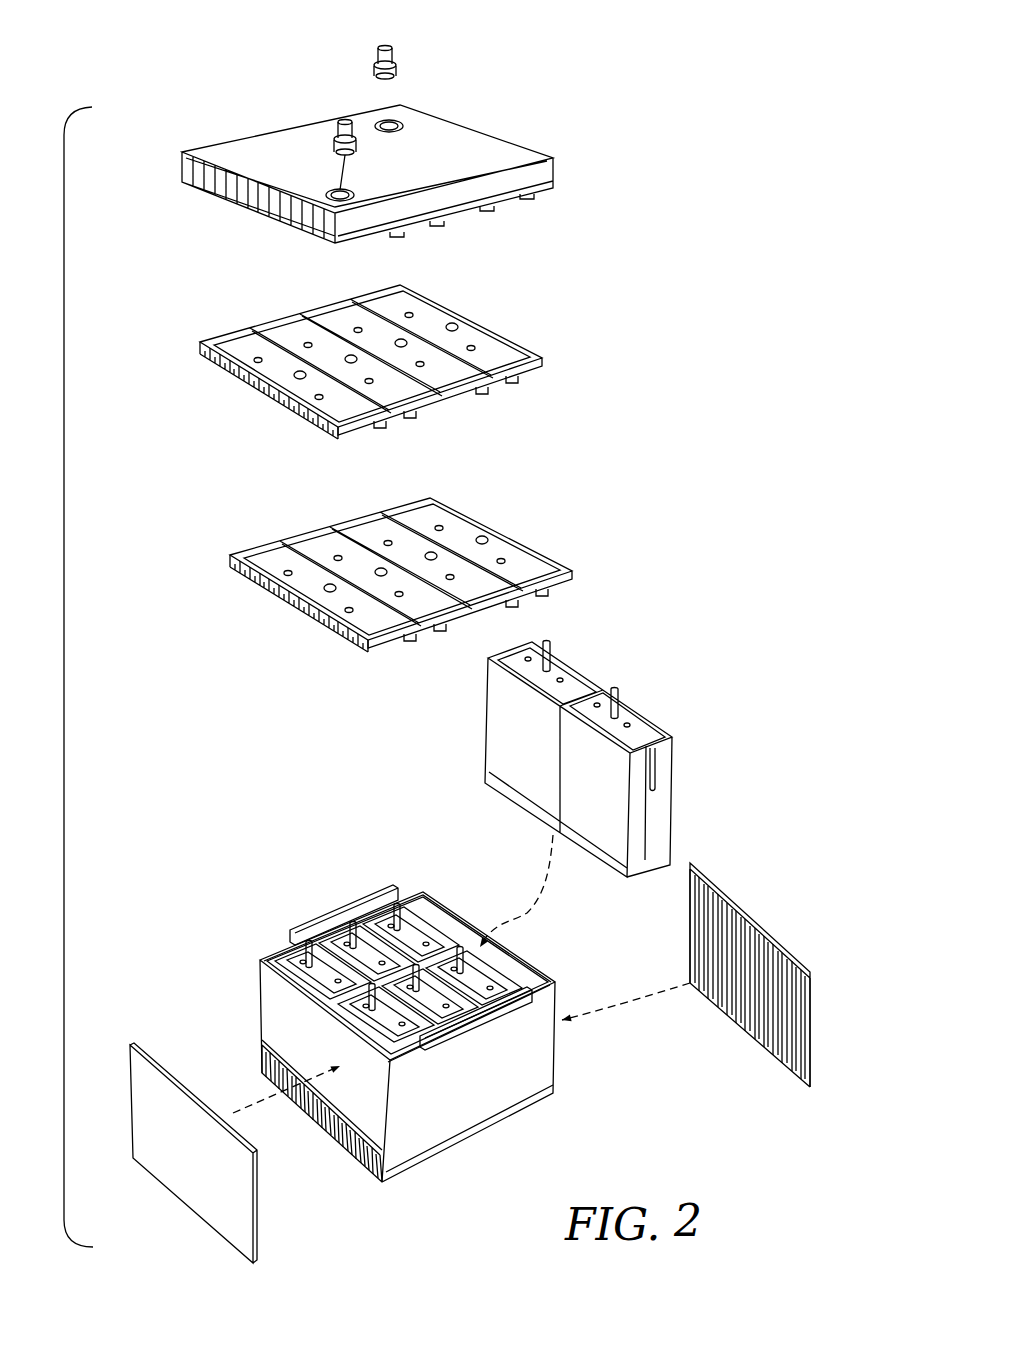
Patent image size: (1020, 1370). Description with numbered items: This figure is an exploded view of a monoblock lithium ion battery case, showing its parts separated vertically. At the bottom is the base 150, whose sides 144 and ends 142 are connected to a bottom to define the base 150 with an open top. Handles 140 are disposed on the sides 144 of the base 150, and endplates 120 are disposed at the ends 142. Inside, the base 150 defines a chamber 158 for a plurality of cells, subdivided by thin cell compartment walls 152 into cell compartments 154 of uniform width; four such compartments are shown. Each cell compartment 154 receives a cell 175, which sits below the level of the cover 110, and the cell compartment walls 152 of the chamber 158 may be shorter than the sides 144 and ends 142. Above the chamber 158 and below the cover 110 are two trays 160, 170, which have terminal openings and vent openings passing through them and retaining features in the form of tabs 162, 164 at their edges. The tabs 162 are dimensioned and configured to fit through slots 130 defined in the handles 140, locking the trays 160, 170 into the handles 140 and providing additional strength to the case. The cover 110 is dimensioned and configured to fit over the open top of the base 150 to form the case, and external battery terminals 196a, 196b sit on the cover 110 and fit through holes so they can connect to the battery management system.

The cover 110 is at (473, 148).
The external battery terminal 196a is at (387, 47).
The external battery terminal 196b is at (340, 135).
The tray 160 is at (498, 358).
The tab 164 is at (200, 348).
The tab 162 is at (498, 380).
The tray 170 is at (523, 563).
The cell 175 is at (600, 663).
The cell compartment wall 152 is at (433, 996).
The handle 140 is at (461, 1043).
The cell compartment 154 is at (498, 970).
The slot 130 is at (320, 925).
The end 142 is at (368, 1095).
The side 144 is at (473, 1093).
The chamber 158 is at (518, 978).
The base 150 is at (578, 1053).
The endplate 120 is at (733, 900).